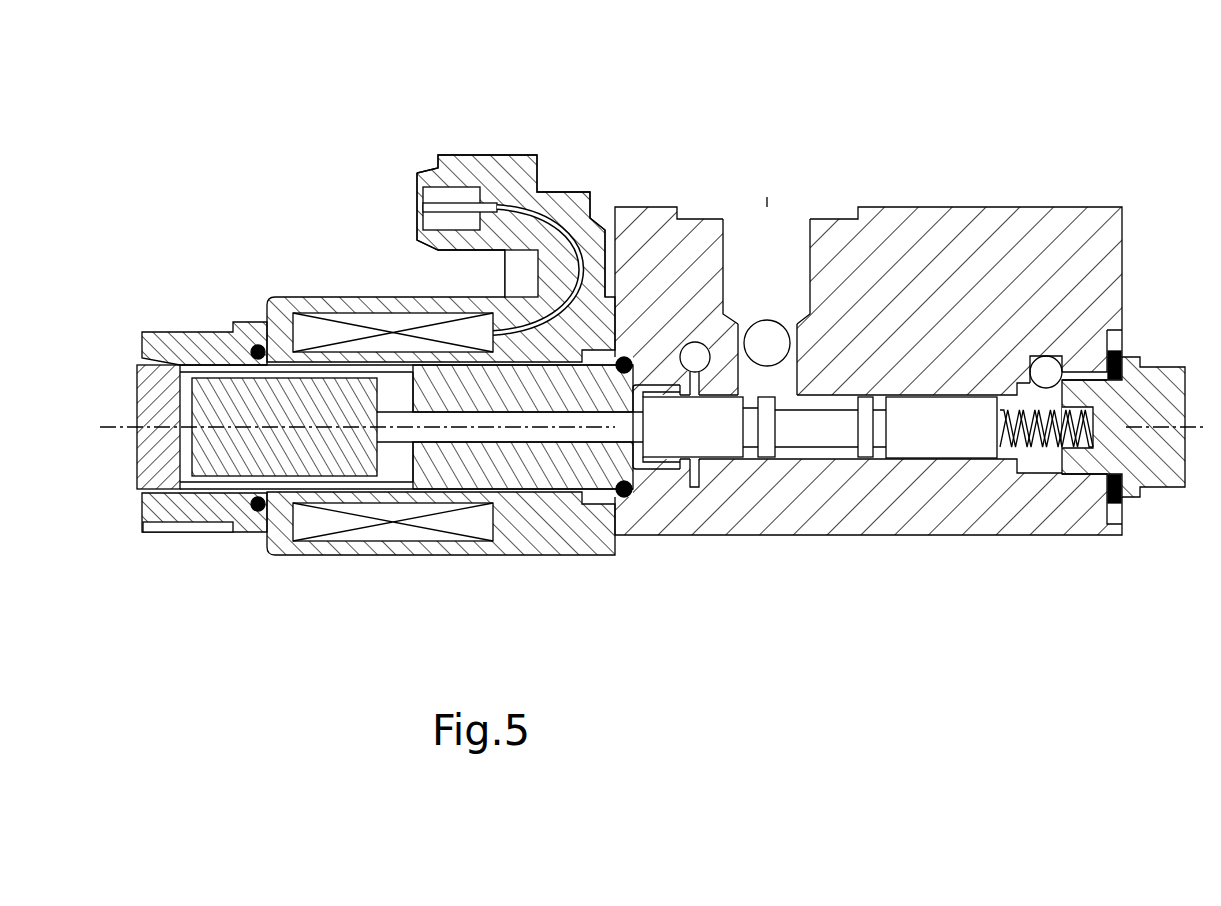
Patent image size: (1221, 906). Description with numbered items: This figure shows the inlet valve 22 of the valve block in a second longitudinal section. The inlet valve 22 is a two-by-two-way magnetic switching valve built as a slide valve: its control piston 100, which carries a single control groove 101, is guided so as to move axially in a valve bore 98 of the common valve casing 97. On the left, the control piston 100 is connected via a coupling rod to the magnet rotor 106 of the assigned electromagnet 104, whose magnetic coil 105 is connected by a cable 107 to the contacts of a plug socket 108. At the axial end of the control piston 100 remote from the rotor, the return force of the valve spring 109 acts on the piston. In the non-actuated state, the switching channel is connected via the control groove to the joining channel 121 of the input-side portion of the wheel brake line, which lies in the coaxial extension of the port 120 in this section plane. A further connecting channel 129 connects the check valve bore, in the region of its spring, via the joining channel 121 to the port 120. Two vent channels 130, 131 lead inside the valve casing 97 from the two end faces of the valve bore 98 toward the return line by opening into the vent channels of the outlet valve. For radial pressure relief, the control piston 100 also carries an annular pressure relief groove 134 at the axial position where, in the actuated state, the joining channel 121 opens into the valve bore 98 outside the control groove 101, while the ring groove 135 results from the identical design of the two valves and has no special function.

The inlet valve 22 is at (652, 358).
The valve casing 97 is at (957, 248).
The valve bore 98 is at (1007, 452).
The control piston 100 is at (945, 437).
The control groove 101 is at (820, 534).
The electromagnet 104 is at (390, 358).
The magnetic coil 105 is at (393, 330).
The magnet rotor 106 is at (225, 452).
The cable 107 is at (558, 222).
The plug socket 108 is at (465, 172).
The valve spring 109 is at (1038, 450).
The port 120 is at (787, 262).
The joining channel 121 is at (780, 380).
The further connecting channel 129 is at (757, 340).
The vent channel 130 is at (696, 355).
The vent channel 131 is at (1047, 368).
The annular pressure relief groove 134 is at (753, 437).
The ring groove 135 is at (880, 437).